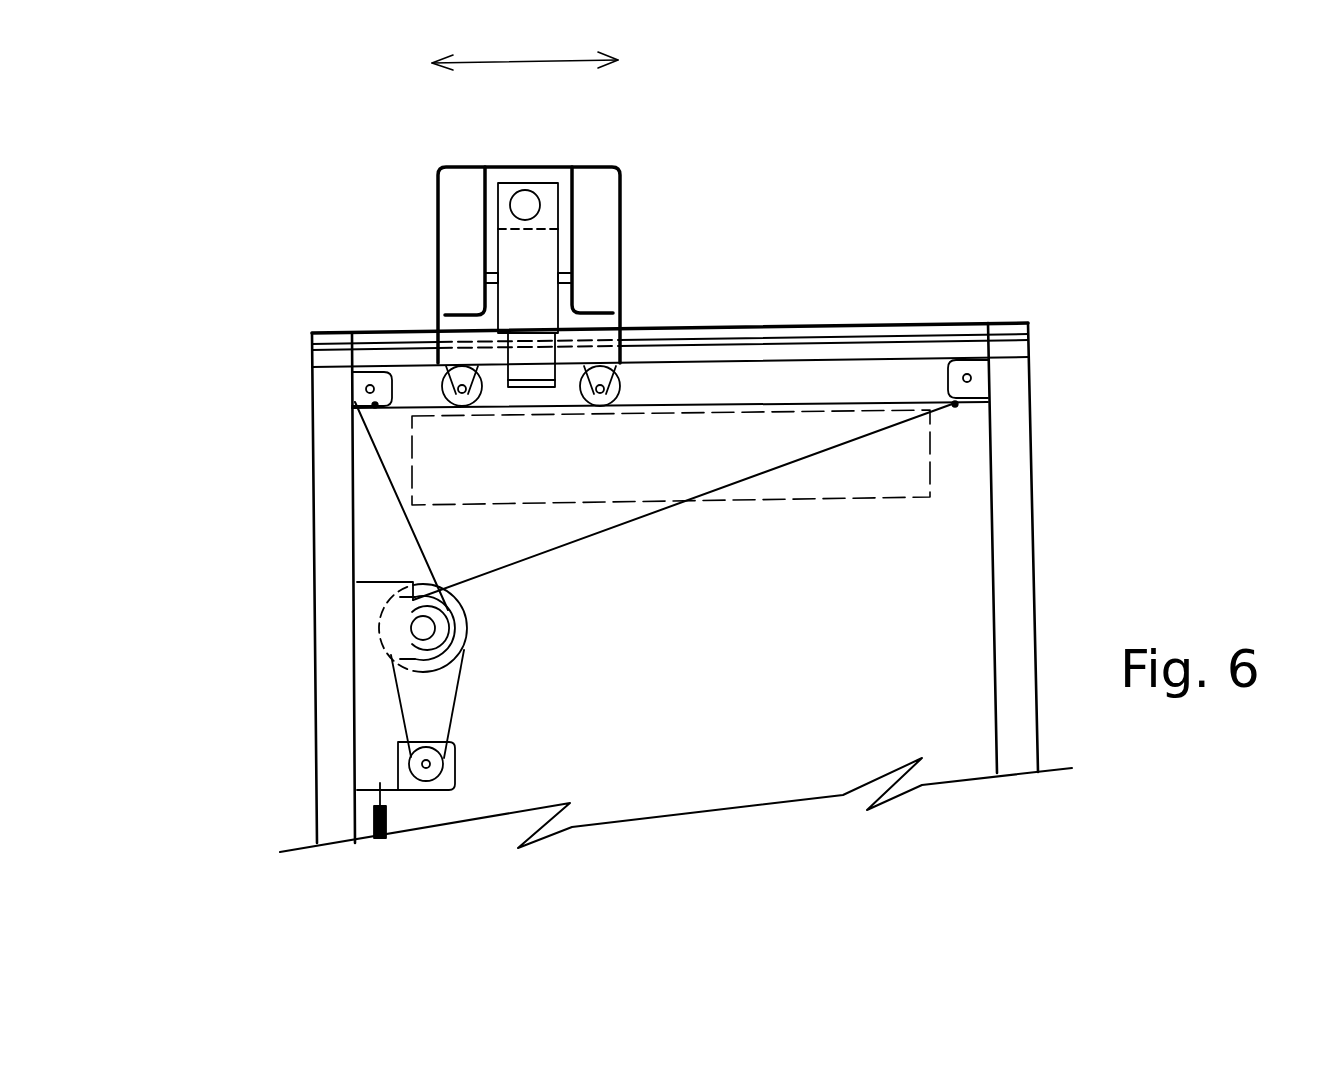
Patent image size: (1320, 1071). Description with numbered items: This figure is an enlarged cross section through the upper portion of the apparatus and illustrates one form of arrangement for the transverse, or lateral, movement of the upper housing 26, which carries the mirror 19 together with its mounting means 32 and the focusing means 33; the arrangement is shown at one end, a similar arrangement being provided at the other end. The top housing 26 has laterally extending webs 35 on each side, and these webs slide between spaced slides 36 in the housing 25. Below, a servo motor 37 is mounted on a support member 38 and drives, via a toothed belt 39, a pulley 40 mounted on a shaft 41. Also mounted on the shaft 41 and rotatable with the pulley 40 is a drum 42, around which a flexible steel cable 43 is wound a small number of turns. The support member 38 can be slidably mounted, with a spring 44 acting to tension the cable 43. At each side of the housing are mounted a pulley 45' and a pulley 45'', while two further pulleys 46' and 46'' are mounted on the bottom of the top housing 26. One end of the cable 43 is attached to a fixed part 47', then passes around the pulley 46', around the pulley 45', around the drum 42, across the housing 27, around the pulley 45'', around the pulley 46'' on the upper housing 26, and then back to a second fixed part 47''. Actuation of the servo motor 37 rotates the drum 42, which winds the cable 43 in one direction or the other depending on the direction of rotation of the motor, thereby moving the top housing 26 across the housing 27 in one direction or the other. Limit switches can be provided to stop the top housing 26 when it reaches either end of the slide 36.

The mirror 19 is at (524, 200).
The housing 25 is at (312, 420).
The upper housing 26 is at (440, 210).
The housing 27 is at (772, 410).
The mounting means 32 is at (577, 190).
The focusing means 33 is at (543, 372).
The laterally extending webs 35 is at (590, 345).
The spaced slides 36 is at (832, 327).
The servo motor 37 is at (407, 778).
The support member 38 is at (366, 652).
The toothed belt 39 is at (433, 712).
The pulley 40 is at (433, 603).
The shaft 41 is at (430, 635).
The drum 42 is at (447, 625).
The flexible steel cable 43 is at (447, 408).
The spring 44 is at (365, 833).
The pulley 45' is at (330, 333).
The pulley 45'' is at (1007, 322).
The pulley 46' is at (417, 330).
The pulley 46'' is at (684, 336).
The fixed part 47' is at (281, 442).
The fixed part 47'' is at (1044, 447).